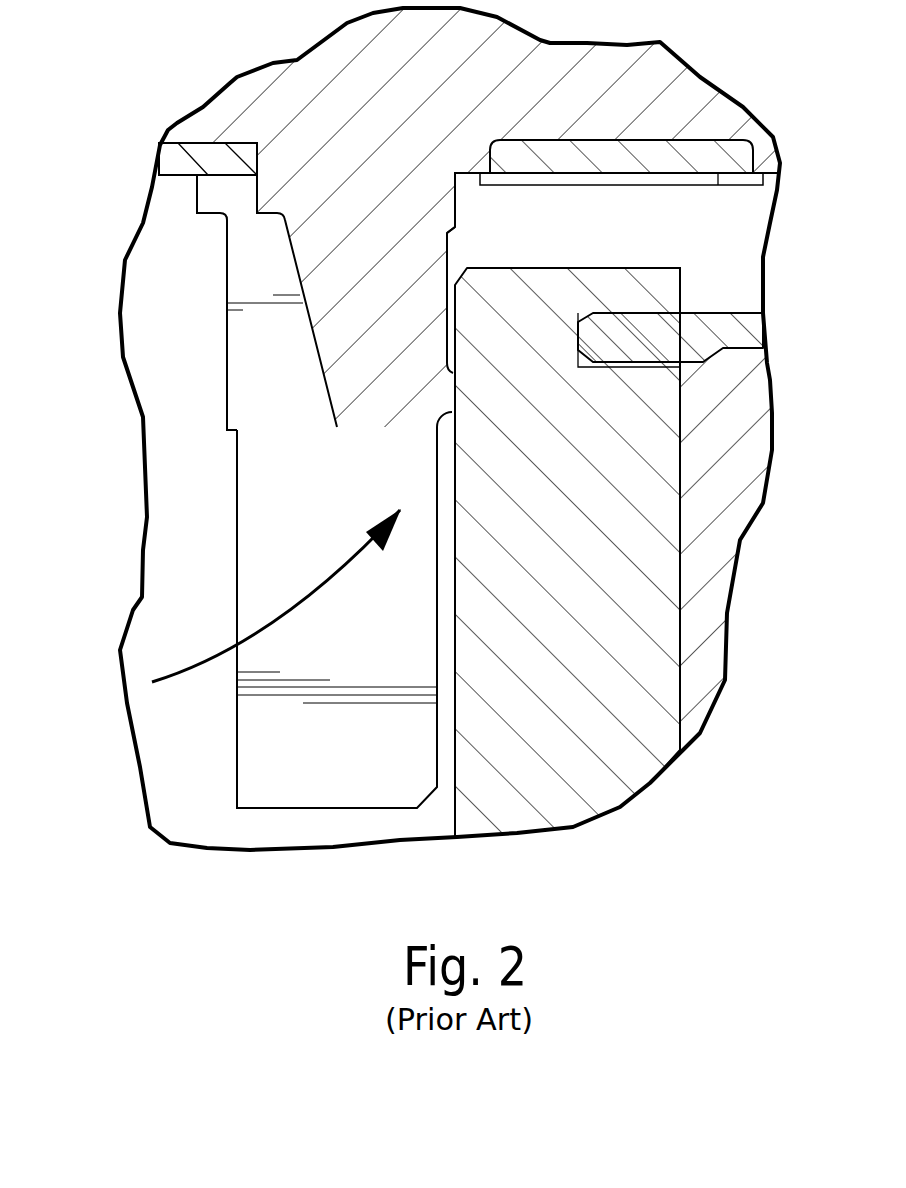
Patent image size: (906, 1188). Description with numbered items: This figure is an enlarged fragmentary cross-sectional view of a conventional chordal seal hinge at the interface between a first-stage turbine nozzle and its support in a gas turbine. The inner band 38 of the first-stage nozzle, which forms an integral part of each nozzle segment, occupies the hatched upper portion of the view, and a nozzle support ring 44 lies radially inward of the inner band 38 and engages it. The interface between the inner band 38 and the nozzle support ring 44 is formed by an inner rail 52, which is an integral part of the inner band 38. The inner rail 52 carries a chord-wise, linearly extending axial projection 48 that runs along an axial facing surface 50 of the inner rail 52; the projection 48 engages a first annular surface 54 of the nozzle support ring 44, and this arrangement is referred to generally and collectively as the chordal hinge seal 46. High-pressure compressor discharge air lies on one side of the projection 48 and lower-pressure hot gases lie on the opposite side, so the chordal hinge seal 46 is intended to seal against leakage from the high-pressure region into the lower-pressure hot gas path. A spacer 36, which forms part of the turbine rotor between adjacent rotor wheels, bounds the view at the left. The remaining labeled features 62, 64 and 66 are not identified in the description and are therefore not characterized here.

The spacer 36 is at (175, 593).
The inner band 38 is at (285, 100).
The nozzle support ring 44 is at (603, 793).
The chordal hinge seal 46 is at (164, 333).
The axial projection 48 is at (453, 390).
The axial facing surface 50 is at (447, 263).
The inner rail 52 is at (327, 238).
The first annular surface 54 is at (455, 582).
The space 62 is at (613, 239).
The flange 64 is at (683, 262).
The ring 66 is at (685, 185).